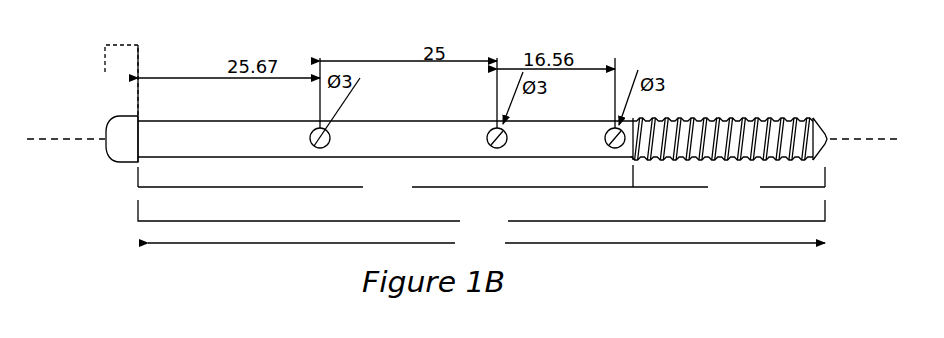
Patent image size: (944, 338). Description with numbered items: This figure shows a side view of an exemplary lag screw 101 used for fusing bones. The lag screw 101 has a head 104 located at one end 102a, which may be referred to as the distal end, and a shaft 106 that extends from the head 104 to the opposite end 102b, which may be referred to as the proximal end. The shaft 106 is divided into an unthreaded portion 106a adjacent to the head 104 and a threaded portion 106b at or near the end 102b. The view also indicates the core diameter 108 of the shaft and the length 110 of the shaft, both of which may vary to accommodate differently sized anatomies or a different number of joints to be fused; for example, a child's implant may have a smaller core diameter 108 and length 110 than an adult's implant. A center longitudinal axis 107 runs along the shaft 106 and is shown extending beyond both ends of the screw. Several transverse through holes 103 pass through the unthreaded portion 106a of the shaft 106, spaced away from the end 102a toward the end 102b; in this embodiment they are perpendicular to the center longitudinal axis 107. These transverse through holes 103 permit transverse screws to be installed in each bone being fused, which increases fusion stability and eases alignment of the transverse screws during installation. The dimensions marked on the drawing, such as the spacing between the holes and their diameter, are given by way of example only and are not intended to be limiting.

The lag screw 101 is at (728, 86).
The end 102a is at (108, 168).
The end 102b is at (827, 124).
The transverse through holes 103 is at (493, 142).
The head 104 is at (127, 44).
The shaft 106 is at (481, 215).
The unthreaded portion 106a is at (385, 182).
The threaded portion 106b is at (729, 183).
The center longitudinal axis 107 is at (50, 139).
The core diameter 108 is at (215, 176).
The length 110 is at (486, 242).